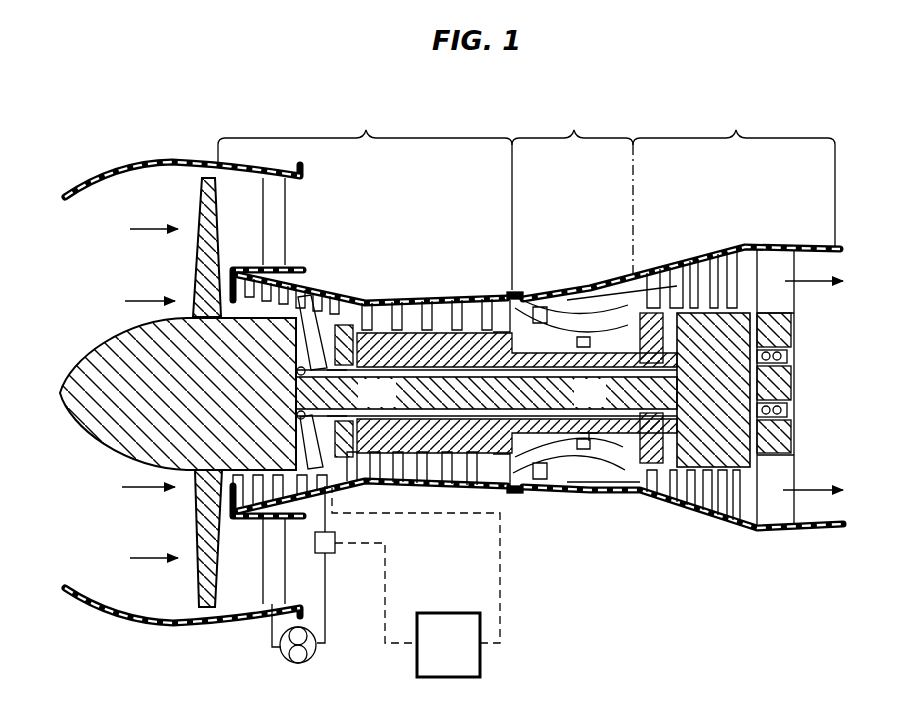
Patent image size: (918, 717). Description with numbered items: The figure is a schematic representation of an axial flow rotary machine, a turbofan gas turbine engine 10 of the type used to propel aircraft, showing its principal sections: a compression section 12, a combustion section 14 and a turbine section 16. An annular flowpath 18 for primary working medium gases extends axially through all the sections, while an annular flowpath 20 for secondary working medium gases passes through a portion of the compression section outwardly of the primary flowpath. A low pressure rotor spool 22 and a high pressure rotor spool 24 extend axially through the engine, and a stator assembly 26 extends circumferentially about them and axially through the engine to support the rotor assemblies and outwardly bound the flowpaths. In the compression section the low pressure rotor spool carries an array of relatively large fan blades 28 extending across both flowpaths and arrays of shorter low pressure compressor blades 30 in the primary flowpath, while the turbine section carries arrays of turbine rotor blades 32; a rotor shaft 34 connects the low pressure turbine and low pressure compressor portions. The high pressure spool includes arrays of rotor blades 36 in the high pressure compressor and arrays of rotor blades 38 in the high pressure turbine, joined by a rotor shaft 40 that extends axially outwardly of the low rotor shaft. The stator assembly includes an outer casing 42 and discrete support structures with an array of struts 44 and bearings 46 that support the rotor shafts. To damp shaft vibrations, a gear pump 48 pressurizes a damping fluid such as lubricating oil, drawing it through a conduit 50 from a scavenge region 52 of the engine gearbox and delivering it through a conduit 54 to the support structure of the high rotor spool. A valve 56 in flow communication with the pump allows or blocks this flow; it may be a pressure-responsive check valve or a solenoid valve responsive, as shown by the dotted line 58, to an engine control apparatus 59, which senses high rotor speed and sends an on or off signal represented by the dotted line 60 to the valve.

The turbofan gas turbine engine 10 is at (98, 146).
The compression section 12 is at (365, 199).
The combustion section 14 is at (572, 192).
The turbine section 16 is at (734, 176).
The annular flowpath for primary working medium gases 18 is at (127, 301).
The annular flowpath for secondary working medium gases 20 is at (131, 229).
The low pressure rotor spool 22 is at (58, 402).
The high pressure rotor spool 24 is at (470, 313).
The stator assembly 26 is at (697, 260).
The fan blades 28 is at (197, 186).
The low pressure compressor blades 30 is at (247, 490).
The turbine rotor blades 32 is at (751, 249).
The rotor shaft 34 is at (603, 398).
The rotor blades 36 is at (387, 305).
The rotor blades 38 is at (657, 298).
The rotor shaft 40 is at (553, 353).
The outer casing 42 is at (790, 532).
The struts 44 is at (320, 322).
The bearings 46 is at (345, 372).
The gear pump 48 is at (311, 664).
The conduit 50 is at (270, 638).
The scavenge region 52 is at (285, 603).
The conduit 54 is at (326, 620).
The valve 56 is at (335, 551).
The dotted line 58 is at (500, 575).
The engine control apparatus 59 is at (441, 612).
The dotted line 60 is at (386, 576).